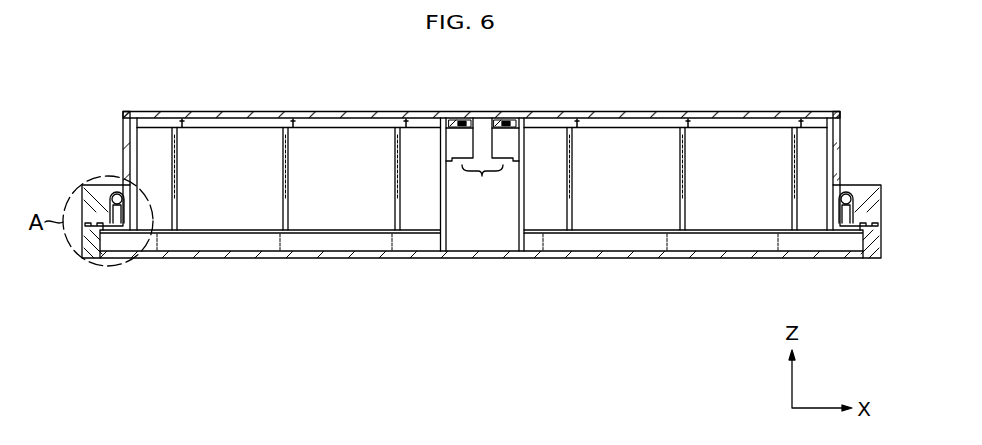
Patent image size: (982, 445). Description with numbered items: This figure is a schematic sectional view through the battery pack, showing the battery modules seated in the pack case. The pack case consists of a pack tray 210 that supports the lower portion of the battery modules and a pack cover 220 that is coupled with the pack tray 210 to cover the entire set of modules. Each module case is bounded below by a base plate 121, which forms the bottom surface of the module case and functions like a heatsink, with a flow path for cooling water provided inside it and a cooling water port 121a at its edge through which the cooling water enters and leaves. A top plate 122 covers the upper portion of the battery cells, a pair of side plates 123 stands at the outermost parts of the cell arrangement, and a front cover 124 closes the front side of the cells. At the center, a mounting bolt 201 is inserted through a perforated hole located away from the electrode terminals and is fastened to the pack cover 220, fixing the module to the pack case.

The base plate 121 is at (353, 240).
The cooling water port 121a is at (850, 195).
The top plate 122 is at (270, 127).
The side plate 123 is at (813, 148).
The front cover 124 is at (447, 221).
The mounting bolt 201 is at (482, 185).
The pack tray 210 is at (482, 259).
The pack cover 220 is at (482, 112).